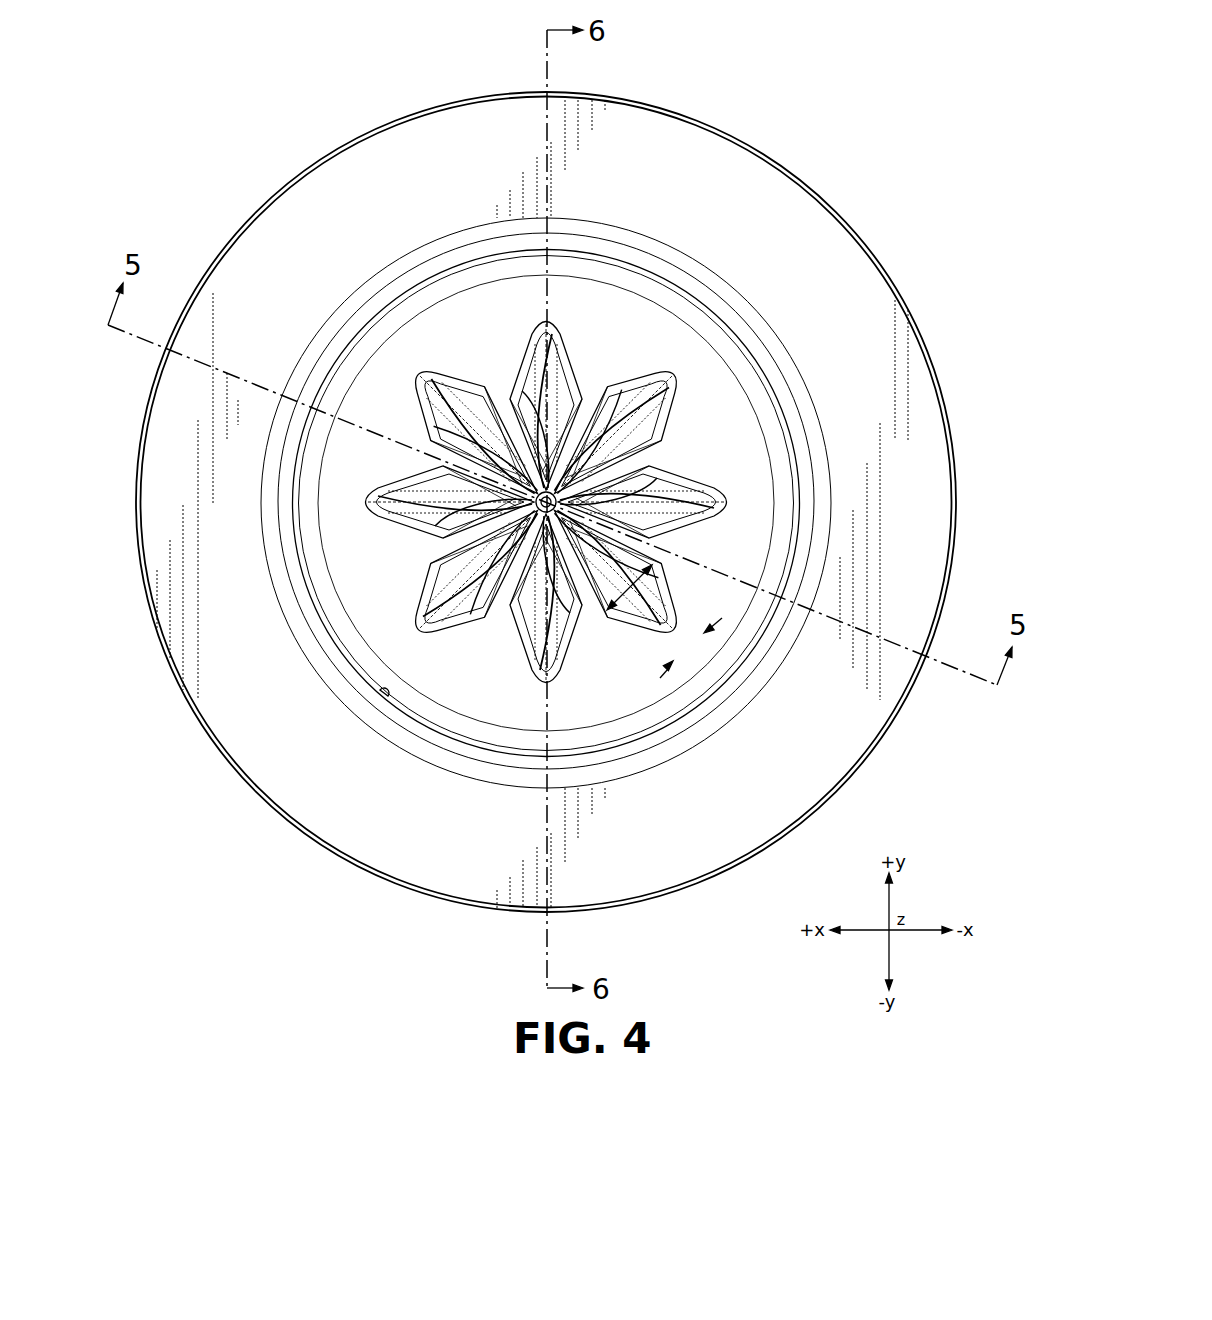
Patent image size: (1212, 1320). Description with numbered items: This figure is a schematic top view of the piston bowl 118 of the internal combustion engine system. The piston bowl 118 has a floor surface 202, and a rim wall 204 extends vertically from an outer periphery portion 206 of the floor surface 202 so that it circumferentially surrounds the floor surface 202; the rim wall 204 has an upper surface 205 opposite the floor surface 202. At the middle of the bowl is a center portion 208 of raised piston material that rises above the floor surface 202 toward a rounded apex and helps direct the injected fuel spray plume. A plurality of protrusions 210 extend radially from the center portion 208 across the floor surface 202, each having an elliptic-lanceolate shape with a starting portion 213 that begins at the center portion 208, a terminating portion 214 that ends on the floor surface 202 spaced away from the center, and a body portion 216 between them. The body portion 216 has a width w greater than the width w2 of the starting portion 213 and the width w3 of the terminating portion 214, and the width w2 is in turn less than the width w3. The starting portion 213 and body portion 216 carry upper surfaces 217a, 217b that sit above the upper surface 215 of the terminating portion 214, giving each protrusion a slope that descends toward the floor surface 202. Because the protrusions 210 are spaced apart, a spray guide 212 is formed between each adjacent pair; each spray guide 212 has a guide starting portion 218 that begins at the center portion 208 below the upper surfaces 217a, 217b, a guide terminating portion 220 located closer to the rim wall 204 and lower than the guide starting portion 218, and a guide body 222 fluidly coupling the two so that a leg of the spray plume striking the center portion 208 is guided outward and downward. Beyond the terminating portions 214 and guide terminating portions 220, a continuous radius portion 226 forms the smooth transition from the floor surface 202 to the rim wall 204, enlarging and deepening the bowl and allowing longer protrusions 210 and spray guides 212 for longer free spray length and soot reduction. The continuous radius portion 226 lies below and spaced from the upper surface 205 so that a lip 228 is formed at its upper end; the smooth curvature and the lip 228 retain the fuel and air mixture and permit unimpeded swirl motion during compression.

The piston bowl 118 is at (238, 927).
The floor surface 202 is at (640, 310).
The rim wall 204 is at (774, 372).
The upper surface 205 is at (821, 380).
The outer periphery portion 206 is at (798, 528).
The center portion 208 is at (552, 490).
The plurality of protrusions 210 is at (509, 531).
The spray guide 212 is at (523, 392).
The starting portion 213 is at (570, 420).
The terminating portion 214 is at (413, 375).
The upper surface 215 is at (427, 395).
The body portion 216 is at (460, 410).
The upper surface 217a is at (490, 418).
The upper surface 217b is at (465, 430).
The guide starting portion 218 is at (552, 475).
The guide terminating portion 220 is at (503, 634).
The guide body 222 is at (655, 455).
The continuous radius portion 226 is at (443, 718).
The lip 228 is at (383, 695).
The width w is at (650, 590).
The width w2 is at (606, 500).
The width w3 is at (722, 618).